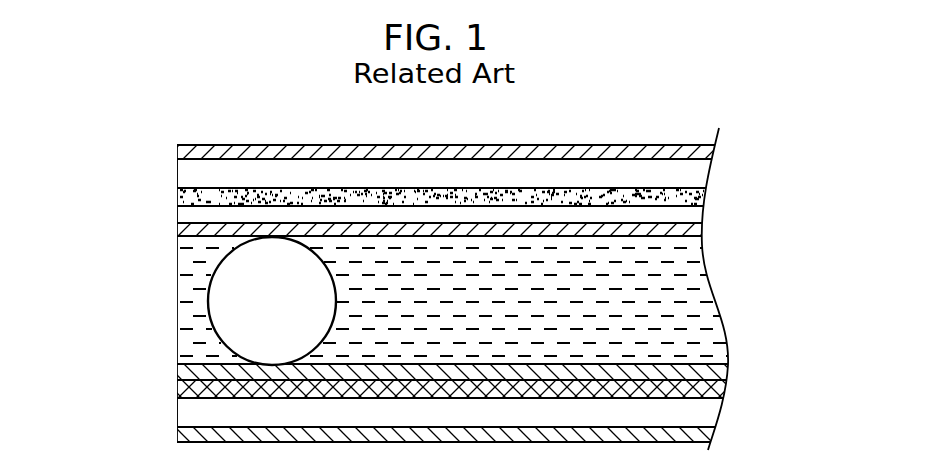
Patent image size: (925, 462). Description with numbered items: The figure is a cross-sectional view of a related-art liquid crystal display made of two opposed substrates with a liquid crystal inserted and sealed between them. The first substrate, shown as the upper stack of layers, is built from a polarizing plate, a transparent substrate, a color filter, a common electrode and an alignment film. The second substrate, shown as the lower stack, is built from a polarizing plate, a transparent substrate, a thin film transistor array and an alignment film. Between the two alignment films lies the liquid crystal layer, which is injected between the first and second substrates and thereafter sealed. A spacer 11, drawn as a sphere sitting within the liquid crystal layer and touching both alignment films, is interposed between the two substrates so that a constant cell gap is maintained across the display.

The spacer 11 is at (210, 303).